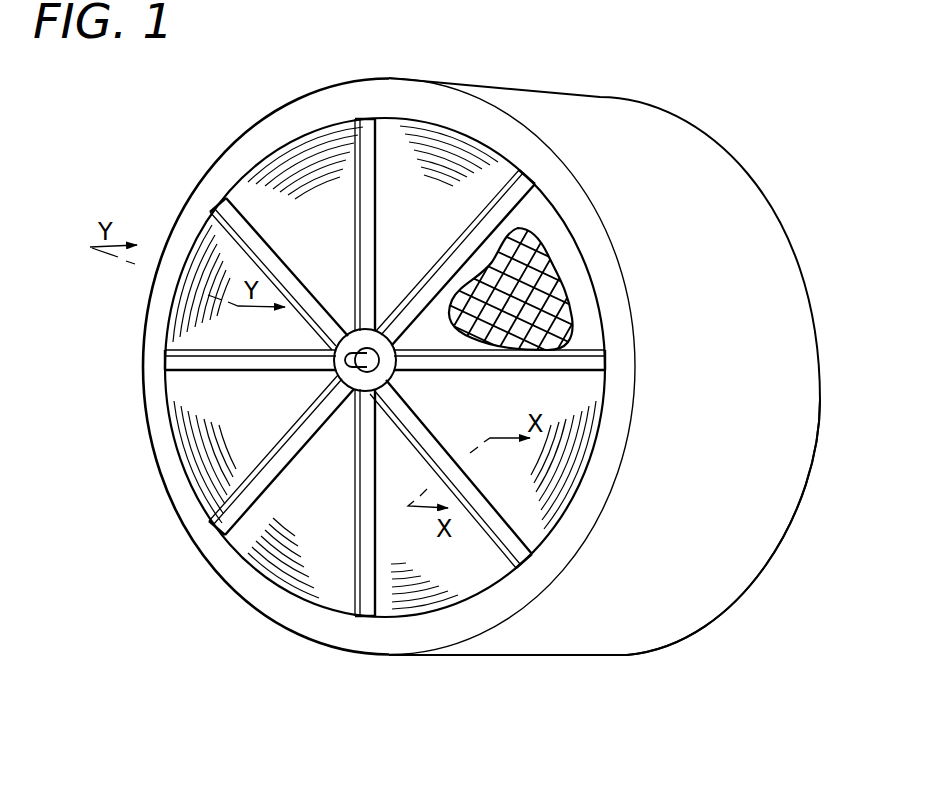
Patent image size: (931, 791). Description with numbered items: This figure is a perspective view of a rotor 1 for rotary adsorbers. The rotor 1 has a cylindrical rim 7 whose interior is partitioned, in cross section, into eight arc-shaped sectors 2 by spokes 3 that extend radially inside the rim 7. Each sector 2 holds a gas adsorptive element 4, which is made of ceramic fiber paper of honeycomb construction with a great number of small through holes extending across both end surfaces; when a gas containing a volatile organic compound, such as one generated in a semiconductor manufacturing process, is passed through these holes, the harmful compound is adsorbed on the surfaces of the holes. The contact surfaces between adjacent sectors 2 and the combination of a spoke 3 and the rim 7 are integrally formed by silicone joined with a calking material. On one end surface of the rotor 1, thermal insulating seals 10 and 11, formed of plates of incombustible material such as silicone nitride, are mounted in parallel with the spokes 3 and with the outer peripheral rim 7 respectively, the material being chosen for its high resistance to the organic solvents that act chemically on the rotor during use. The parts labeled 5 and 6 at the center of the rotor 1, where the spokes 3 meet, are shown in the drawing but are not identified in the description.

The rotor 1 is at (690, 537).
The arc-shaped sector 2 is at (487, 172).
The spoke 3 is at (452, 237).
The gas adsorptive element 4 is at (571, 294).
The shaft 5 is at (372, 330).
The hub 6 is at (340, 353).
The cylindrical rim 7 is at (710, 582).
The thermal insulating seal 10 is at (383, 128).
The thermal insulating seal 11 is at (612, 452).